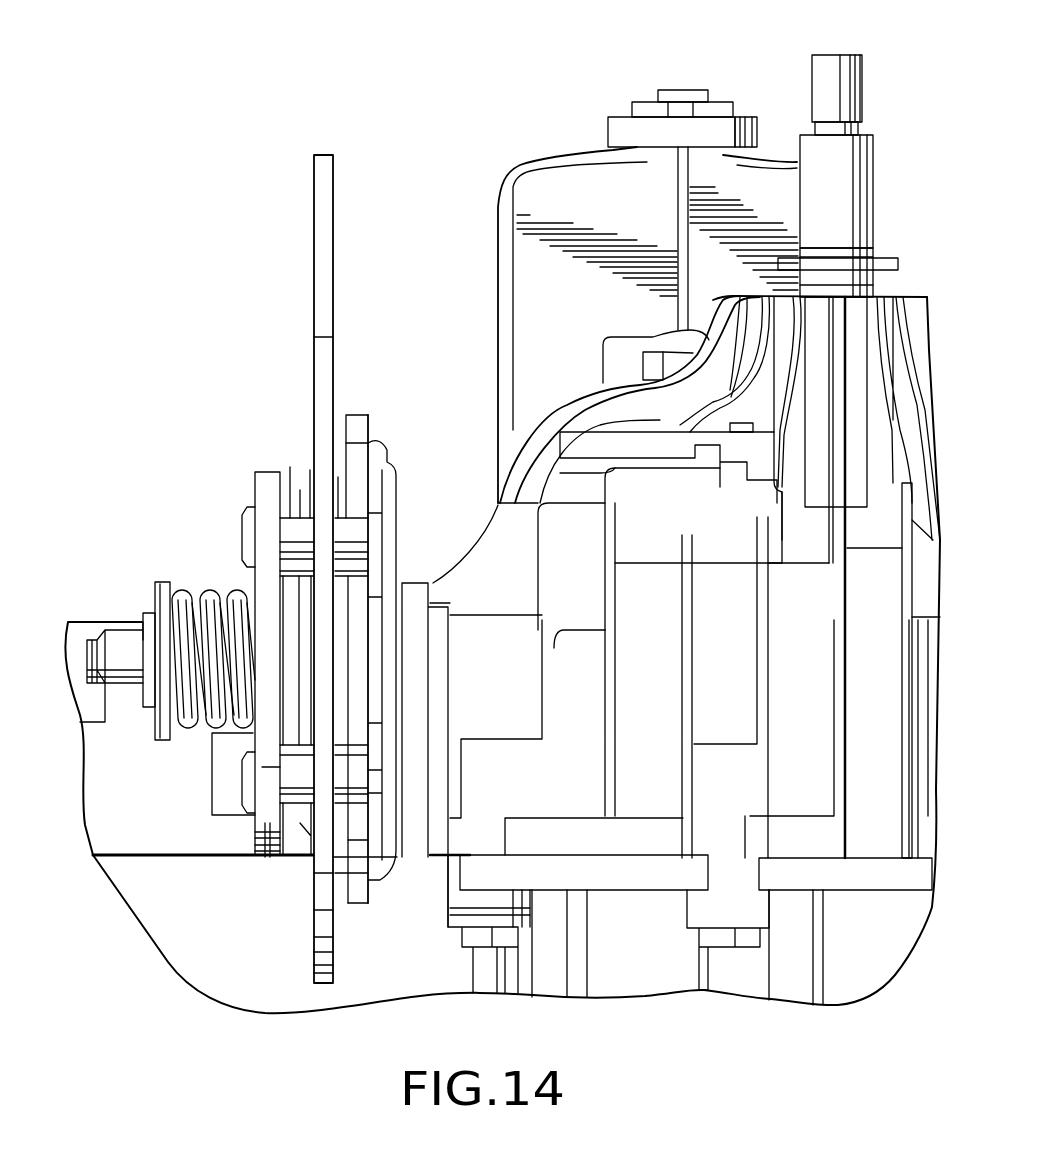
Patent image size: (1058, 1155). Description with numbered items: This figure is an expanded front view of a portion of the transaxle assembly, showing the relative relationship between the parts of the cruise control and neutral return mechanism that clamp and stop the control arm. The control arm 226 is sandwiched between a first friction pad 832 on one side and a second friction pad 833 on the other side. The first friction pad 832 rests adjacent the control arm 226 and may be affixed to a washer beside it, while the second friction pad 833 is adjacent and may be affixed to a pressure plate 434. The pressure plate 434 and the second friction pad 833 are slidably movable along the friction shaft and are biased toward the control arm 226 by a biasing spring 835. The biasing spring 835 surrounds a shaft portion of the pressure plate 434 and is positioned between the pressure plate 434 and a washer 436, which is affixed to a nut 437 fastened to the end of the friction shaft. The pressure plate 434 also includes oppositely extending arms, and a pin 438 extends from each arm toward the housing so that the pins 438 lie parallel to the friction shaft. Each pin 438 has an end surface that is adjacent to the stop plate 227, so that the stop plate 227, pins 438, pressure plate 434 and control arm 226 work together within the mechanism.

The control arm 226 is at (318, 278).
The stop plate 227 is at (395, 503).
The first friction pad 832 is at (338, 477).
The second friction pad 833 is at (306, 492).
The pin 438 is at (303, 490).
The biasing spring 835 is at (193, 600).
The washer 436 is at (158, 590).
The nut 437 is at (132, 680).
The pressure plate 434 is at (268, 823).